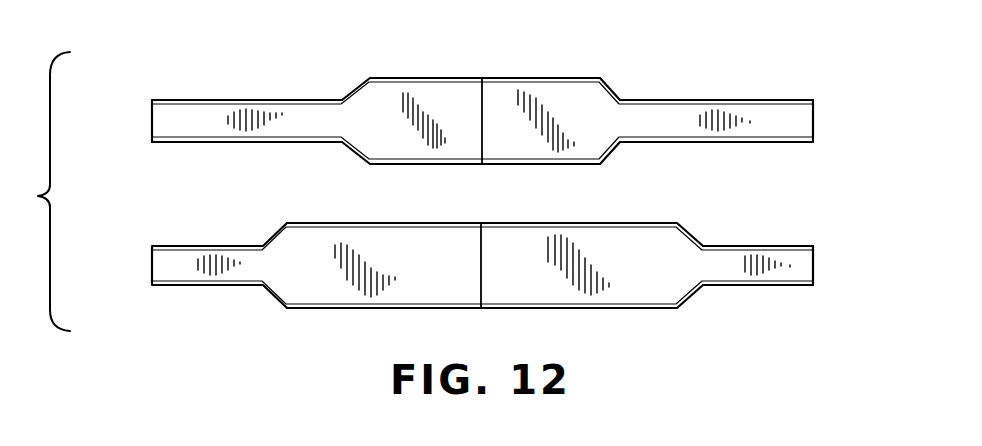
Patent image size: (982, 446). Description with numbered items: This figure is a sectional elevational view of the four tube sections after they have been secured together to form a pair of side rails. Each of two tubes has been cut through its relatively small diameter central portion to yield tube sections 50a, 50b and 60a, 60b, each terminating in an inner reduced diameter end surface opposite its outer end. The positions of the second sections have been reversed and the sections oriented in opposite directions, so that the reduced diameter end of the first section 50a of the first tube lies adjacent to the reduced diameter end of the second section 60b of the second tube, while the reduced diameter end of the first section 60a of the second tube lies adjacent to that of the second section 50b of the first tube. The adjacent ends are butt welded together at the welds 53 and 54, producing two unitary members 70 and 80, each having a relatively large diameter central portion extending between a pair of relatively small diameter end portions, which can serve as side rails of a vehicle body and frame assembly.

The first section of the first tube 50a is at (195, 108).
The second section of the first tube 50b is at (759, 283).
The butt weld 53 is at (482, 118).
The butt weld 54 is at (481, 243).
The first section of the second tube 60a is at (303, 288).
The second section of the second tube 60b is at (703, 115).
The unitary member 70 is at (510, 85).
The unitary member 80 is at (507, 268).